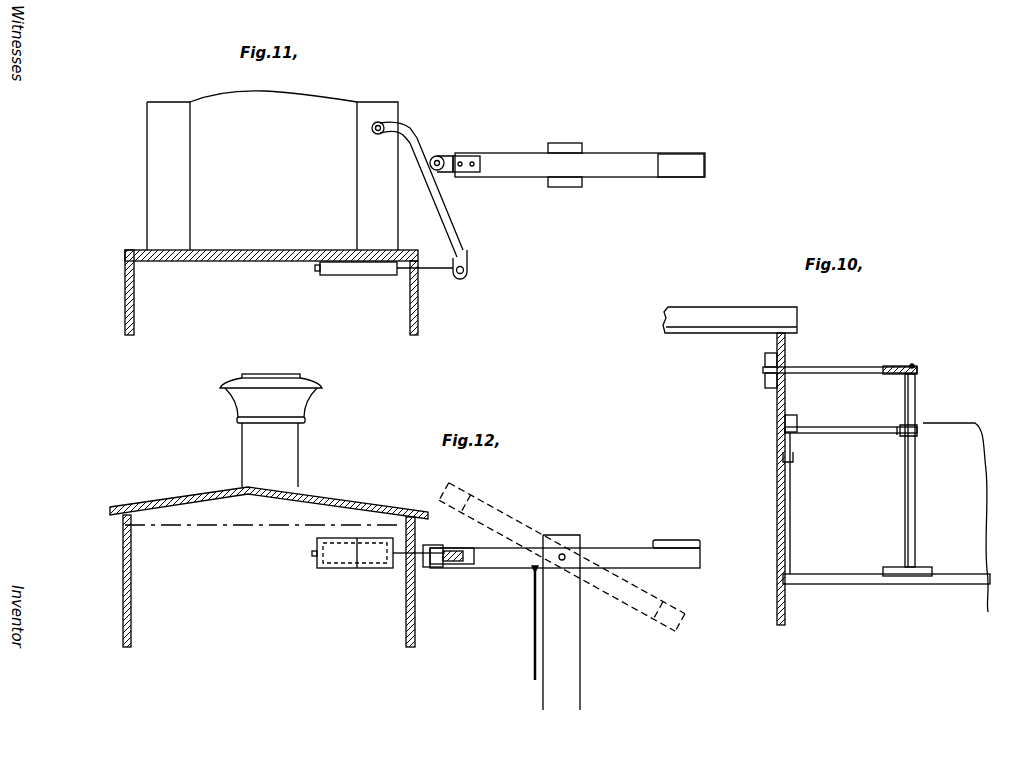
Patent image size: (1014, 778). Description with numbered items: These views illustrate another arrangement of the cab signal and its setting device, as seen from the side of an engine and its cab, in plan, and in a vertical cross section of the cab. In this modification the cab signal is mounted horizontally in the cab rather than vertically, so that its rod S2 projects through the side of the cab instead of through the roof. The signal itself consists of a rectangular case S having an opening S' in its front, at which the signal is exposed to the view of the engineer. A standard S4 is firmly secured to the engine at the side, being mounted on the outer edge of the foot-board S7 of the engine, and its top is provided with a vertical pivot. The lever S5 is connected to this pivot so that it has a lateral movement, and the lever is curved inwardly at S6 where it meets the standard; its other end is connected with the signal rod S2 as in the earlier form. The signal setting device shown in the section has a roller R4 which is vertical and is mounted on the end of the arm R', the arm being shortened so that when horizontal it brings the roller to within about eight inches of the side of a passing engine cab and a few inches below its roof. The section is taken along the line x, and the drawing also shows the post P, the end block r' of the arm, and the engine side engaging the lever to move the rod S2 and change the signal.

In FIG. 11, the rectangular case S is at (356, 280).
In FIG. 12, the rectangular case S is at (368, 566).
In FIG. 10, the opening S' is at (834, 482).
In FIG. 11, the rod S2 is at (440, 280).
In FIG. 11, the standard S4 is at (378, 134).
In FIG. 10, the standard S4 is at (863, 371).
In FIG. 11, the lever S5 is at (422, 220).
In FIG. 11, the inwardly curved portion of lever S6 is at (412, 130).
In FIG. 11, the foot-board S7 is at (362, 226).
In FIG. 10, the foot-board S7 is at (880, 584).
In FIG. 11, the arm R' is at (579, 156).
In FIG. 12, the arm R' is at (565, 571).
In FIG. 12, the roller R4 is at (428, 570).
In FIG. 11, the end block of rack bar r' is at (681, 165).
In FIG. 12, the end block of rack bar r' is at (676, 531).
In FIG. 11, the pawl / post P is at (588, 188).
In FIG. 12, the pawl / post P is at (575, 645).
In FIG. 12, the section line x is at (269, 525).